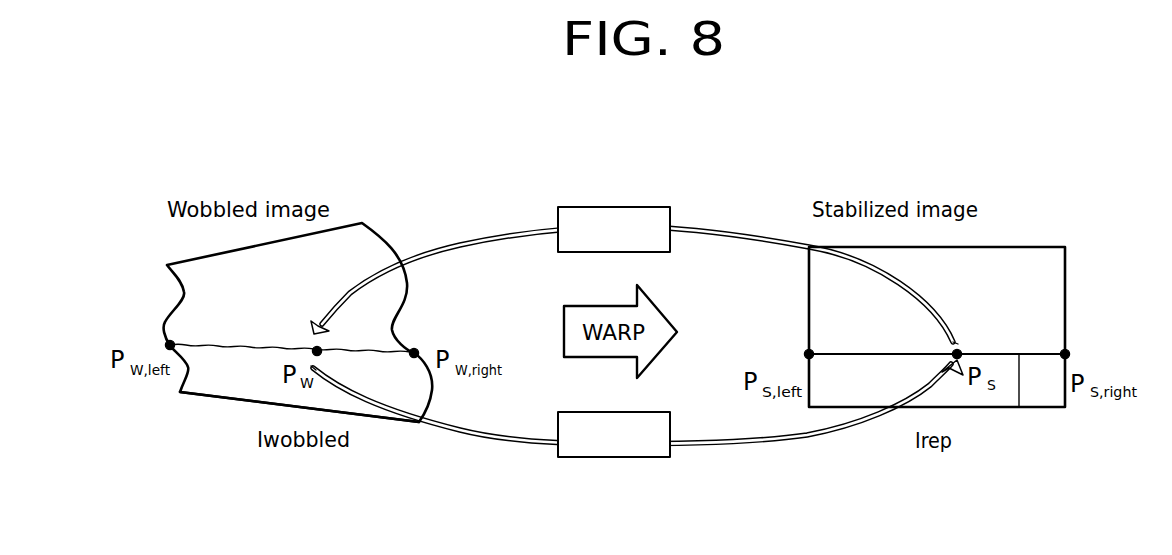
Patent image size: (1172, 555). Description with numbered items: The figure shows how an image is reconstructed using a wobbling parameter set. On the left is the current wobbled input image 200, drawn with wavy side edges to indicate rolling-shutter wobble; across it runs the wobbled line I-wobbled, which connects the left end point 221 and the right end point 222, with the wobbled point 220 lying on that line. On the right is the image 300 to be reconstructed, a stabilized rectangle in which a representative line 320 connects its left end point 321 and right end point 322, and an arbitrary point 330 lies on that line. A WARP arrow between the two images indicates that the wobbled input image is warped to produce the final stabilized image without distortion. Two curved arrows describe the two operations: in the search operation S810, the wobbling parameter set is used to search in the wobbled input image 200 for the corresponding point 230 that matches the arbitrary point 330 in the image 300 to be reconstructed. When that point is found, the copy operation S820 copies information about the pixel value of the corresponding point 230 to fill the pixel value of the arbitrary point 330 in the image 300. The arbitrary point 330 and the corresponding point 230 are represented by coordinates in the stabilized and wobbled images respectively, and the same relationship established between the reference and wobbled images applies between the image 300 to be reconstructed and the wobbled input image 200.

The wobbled input image 200 is at (372, 231).
The point P_W 220 is at (230, 349).
The point P_W,left 221 is at (167, 343).
The point P_W,right 222 is at (416, 351).
The point P_W 230 is at (283, 390).
The image to be reconstructed 300 is at (1006, 248).
The representative straight line 320 is at (1019, 357).
The left end point of representative line 321 is at (806, 352).
The right end point of representative line 322 is at (1068, 352).
The point P_S 330 is at (978, 391).
The search operation S810 is at (614, 207).
The copy operation S820 is at (614, 457).